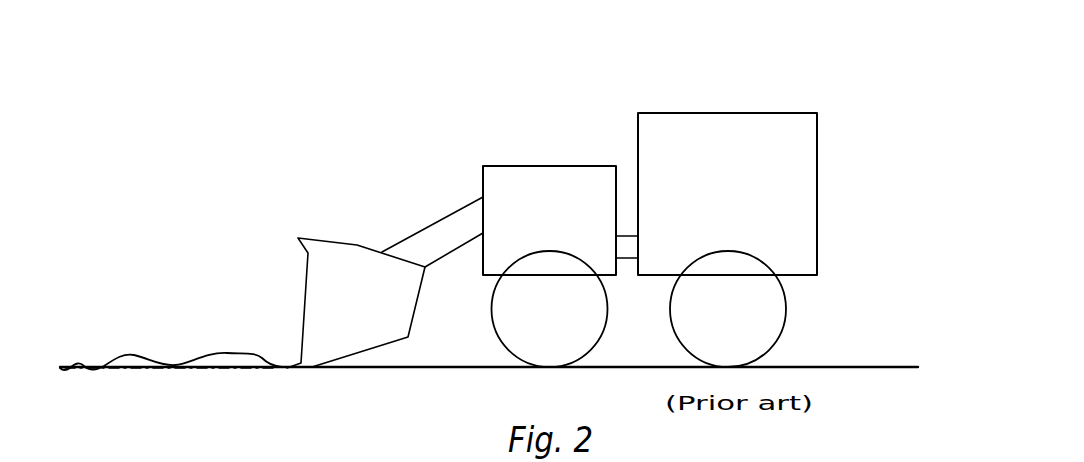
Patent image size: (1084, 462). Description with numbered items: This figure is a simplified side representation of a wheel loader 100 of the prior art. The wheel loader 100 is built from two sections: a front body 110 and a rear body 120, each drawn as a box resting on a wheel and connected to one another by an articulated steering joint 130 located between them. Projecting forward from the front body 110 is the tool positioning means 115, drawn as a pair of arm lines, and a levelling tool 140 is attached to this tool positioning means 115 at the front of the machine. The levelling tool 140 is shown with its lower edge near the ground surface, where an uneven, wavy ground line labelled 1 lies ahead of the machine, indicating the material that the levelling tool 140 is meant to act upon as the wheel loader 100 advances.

The ground / material pile 1 is at (217, 367).
The wheel loader 100 is at (566, 184).
The front body 110 is at (518, 147).
The tool positioning means 115 is at (452, 235).
The rear body 120 is at (803, 97).
The articulated steering joint 130 is at (635, 248).
The levelling tool 140 is at (323, 256).